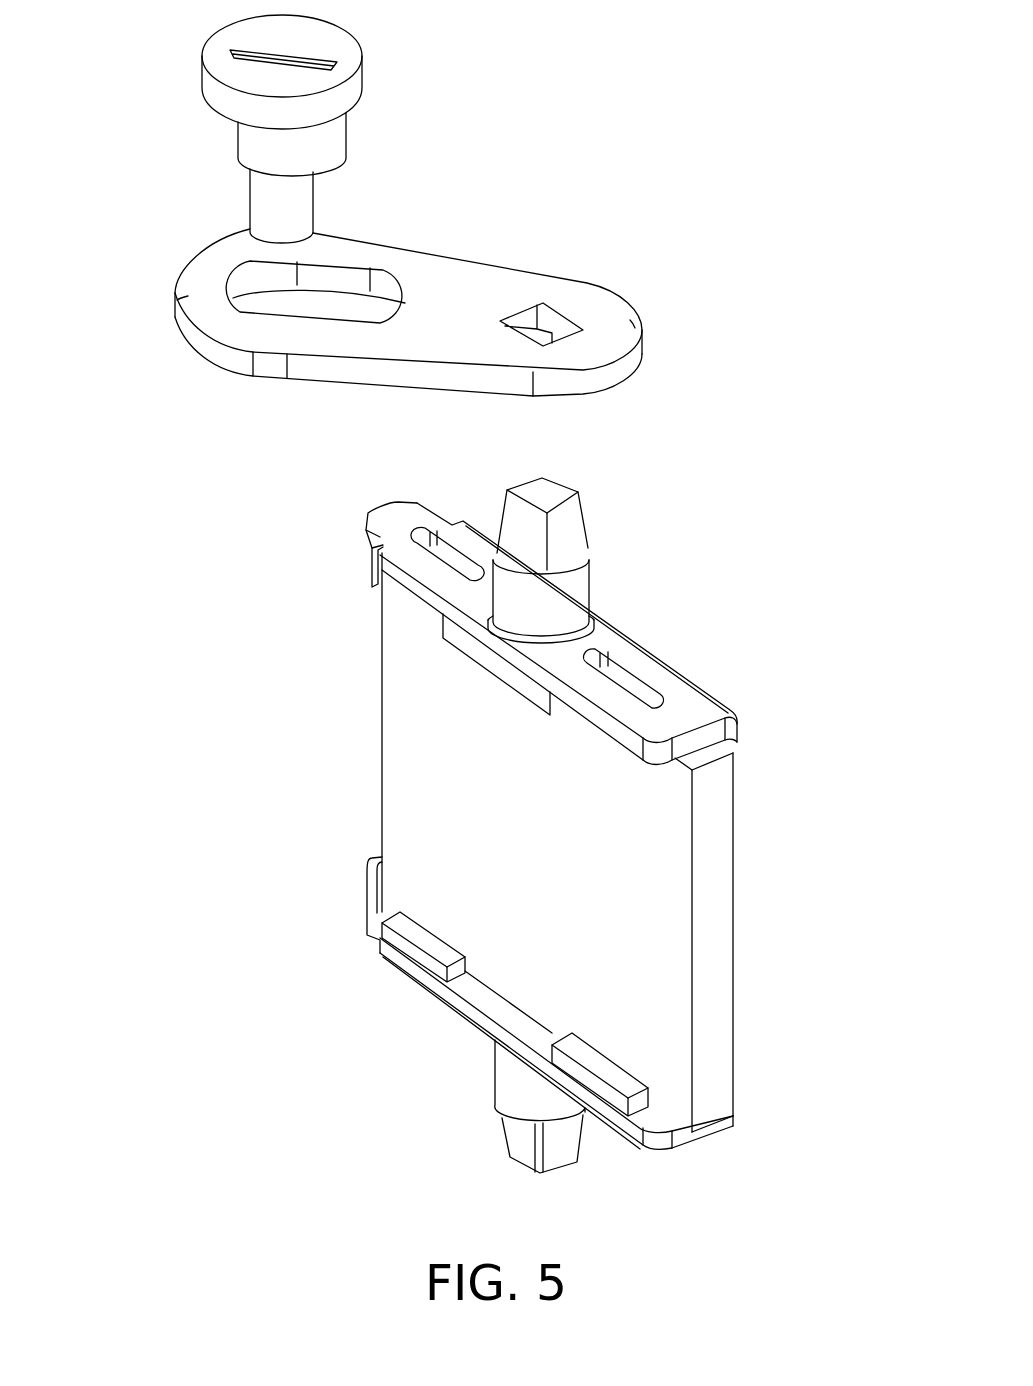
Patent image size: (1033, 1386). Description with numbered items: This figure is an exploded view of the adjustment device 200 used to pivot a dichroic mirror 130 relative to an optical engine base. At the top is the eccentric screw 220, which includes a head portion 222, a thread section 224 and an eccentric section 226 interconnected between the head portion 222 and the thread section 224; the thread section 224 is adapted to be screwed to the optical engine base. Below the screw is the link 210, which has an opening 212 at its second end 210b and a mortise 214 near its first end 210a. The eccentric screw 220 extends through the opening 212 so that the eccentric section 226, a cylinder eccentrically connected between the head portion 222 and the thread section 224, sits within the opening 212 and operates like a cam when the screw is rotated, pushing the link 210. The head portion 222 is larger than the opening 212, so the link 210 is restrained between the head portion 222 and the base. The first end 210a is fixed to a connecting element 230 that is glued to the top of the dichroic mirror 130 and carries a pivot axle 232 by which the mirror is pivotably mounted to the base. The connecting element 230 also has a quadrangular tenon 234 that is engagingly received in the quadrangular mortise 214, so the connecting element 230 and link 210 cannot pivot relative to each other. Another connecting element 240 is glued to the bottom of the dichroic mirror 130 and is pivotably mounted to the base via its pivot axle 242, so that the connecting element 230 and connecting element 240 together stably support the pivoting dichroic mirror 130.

The adjustment device 200 is at (667, 217).
The link 210 is at (467, 293).
The first end of the link 210a is at (622, 327).
The second end of the link 210b is at (203, 288).
The opening 212 is at (343, 323).
The mortise 214 is at (552, 343).
The eccentric screw 220 is at (120, 22).
The head portion 222 is at (223, 52).
The thread section 224 is at (277, 207).
The eccentric section 226 is at (253, 147).
The connecting element 230 is at (708, 710).
The pivot axle 232 is at (572, 585).
The tenon 234 is at (563, 528).
The connecting element 240 is at (653, 1120).
The pivot axle 242 is at (513, 1087).
The dichroic mirror 130 is at (663, 958).